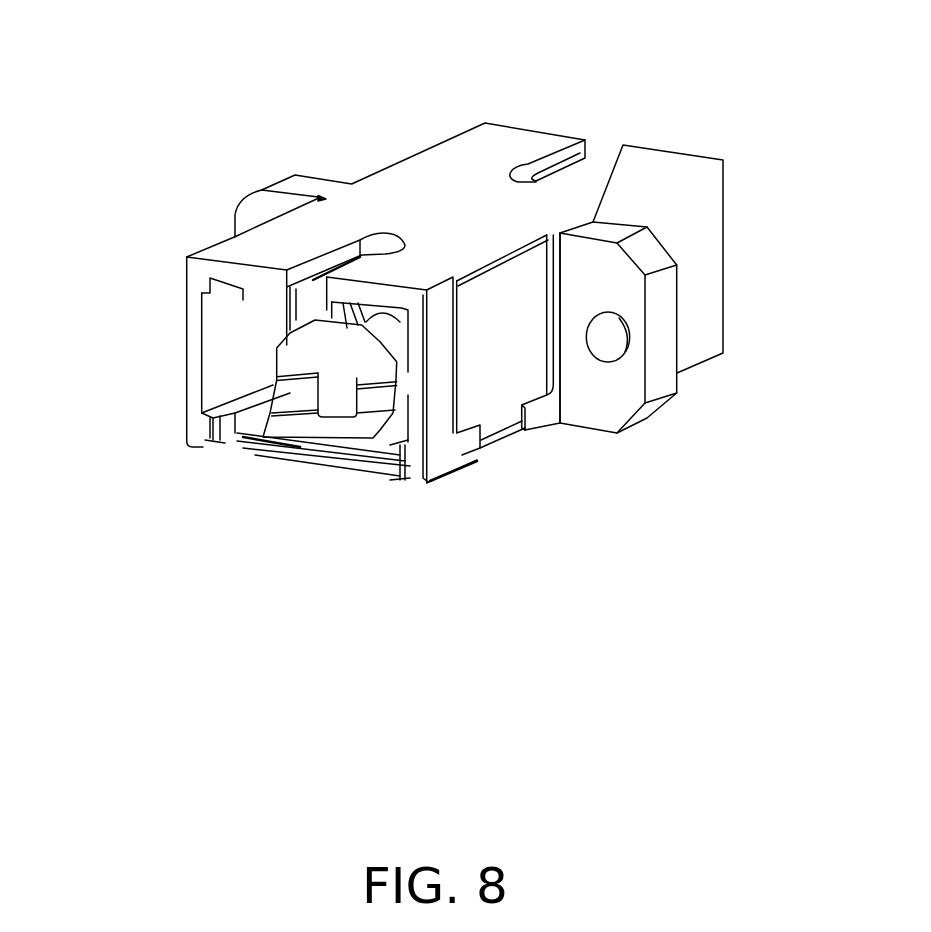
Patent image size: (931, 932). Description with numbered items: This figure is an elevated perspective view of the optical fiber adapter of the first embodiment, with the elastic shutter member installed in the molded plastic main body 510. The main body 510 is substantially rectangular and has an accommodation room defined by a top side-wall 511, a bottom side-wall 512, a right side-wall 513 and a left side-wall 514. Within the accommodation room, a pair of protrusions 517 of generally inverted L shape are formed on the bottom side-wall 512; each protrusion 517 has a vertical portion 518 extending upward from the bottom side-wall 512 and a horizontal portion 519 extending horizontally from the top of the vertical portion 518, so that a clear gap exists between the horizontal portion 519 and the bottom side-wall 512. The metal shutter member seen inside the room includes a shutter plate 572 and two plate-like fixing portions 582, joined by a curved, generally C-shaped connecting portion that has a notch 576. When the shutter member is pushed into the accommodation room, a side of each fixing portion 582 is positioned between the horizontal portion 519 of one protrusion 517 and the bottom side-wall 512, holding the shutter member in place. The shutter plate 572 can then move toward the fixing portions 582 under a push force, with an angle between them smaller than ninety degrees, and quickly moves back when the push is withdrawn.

The main body 510 is at (702, 117).
The top side-wall 511 is at (416, 190).
The bottom side-wall 512 is at (233, 435).
The right side-wall 513 is at (438, 415).
The left side-wall 514 is at (192, 372).
The protrusion 517 is at (203, 430).
The vertical portion 518 is at (207, 437).
The horizontal portion 519 is at (210, 442).
The shutter plate 572 is at (303, 350).
The notch 576 is at (397, 443).
The fixing portion 582 is at (392, 453).